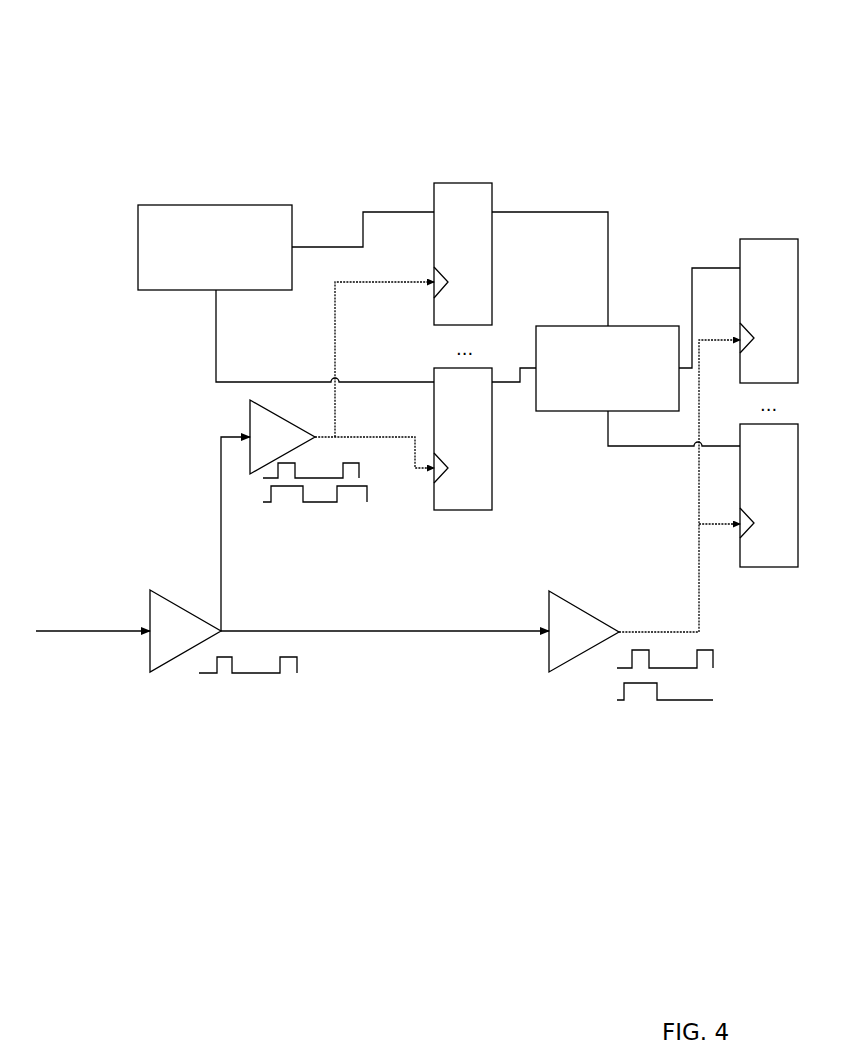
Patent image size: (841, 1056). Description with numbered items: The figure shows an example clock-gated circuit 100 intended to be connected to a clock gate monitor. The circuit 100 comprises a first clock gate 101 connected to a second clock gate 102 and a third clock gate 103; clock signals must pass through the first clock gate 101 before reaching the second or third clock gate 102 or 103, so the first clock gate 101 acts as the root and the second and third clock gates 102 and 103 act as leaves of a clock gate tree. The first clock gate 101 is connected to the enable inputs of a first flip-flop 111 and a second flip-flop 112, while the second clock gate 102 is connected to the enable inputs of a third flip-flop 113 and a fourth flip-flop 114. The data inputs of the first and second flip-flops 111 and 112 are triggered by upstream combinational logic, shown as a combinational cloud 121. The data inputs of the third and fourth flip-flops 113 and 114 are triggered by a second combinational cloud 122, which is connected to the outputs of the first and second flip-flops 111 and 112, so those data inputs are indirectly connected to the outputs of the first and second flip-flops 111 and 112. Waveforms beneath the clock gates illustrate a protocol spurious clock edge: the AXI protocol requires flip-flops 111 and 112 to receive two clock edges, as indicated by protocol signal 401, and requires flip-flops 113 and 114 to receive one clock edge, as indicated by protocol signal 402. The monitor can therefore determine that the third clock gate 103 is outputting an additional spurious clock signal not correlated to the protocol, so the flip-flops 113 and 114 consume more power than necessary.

The circuit 100 is at (251, 62).
The first clock gate 101 is at (292, 555).
The second clock gate 102 is at (342, 378).
The third clock gate 103 is at (644, 506).
The first flip-flop 111 is at (463, 254).
The second flip-flop 112 is at (463, 439).
The third flip-flop 113 is at (769, 311).
The fourth flip-flop 114 is at (769, 495).
The combinational cloud 121 is at (286, 293).
The second combinational cloud 122 is at (616, 329).
The protocol signal 401 is at (315, 512).
The protocol signal 402 is at (665, 700).